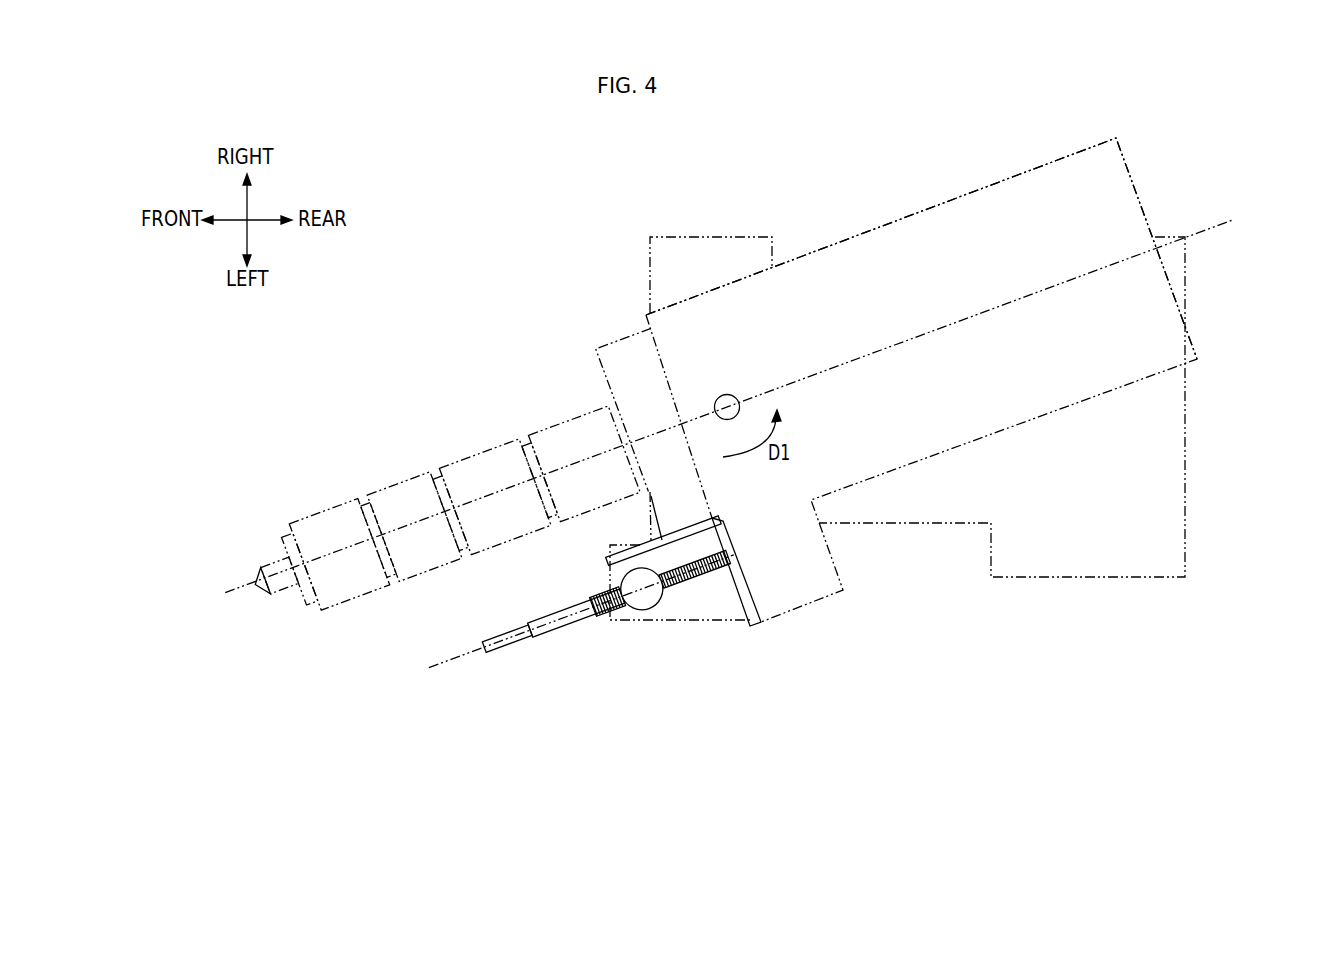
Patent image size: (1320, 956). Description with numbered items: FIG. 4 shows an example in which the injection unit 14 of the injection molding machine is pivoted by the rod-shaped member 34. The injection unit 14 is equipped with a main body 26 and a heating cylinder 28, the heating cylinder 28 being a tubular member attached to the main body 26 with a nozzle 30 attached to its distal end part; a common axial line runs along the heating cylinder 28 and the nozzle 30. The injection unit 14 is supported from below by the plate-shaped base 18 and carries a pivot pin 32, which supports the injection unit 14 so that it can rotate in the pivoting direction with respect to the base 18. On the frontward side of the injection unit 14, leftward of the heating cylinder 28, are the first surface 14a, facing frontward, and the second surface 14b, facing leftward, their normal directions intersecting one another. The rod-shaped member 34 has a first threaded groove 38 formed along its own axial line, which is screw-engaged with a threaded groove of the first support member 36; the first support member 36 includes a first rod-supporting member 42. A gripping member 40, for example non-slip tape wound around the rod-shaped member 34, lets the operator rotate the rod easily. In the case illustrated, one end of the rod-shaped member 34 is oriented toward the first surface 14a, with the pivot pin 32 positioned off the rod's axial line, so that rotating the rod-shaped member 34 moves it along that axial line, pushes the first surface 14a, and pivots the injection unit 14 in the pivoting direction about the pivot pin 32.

The injection unit 14 is at (814, 203).
The first surface 14a is at (742, 571).
The second surface 14b is at (676, 536).
The base 18 is at (1077, 555).
The main body 26 is at (1116, 177).
The heating cylinder 28 is at (336, 515).
The nozzle 30 is at (280, 552).
The pivot pin 32 is at (720, 392).
The rod-shaped member 34 is at (563, 607).
The first support member 36 is at (626, 618).
The first threaded groove 38 is at (600, 605).
The gripping member 40 is at (518, 625).
The first rod-supporting member 42 is at (645, 608).